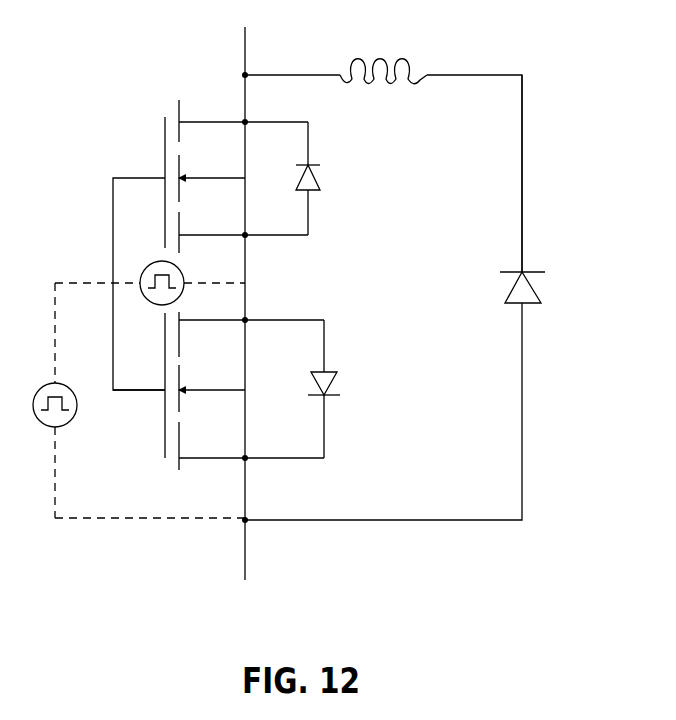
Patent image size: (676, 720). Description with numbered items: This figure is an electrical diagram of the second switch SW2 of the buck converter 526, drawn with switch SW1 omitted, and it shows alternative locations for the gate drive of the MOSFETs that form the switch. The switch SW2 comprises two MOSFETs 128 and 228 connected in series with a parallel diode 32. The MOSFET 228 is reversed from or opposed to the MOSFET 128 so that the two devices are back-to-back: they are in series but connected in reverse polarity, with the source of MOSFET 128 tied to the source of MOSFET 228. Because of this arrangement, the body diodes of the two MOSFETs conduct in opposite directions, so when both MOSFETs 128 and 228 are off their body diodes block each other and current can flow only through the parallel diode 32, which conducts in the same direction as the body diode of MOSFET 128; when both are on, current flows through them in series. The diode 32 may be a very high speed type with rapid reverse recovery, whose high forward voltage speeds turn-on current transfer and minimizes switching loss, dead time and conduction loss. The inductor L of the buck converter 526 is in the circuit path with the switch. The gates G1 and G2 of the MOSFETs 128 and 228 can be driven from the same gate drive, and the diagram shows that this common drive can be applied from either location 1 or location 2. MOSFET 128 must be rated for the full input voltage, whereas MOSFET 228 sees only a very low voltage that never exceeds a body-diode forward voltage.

The MOSFET 128 is at (152, 121).
The gate G1 is at (132, 172).
The location 2 is at (152, 262).
The MOSFET 228 is at (155, 455).
The gate G2 is at (128, 398).
The location 1 is at (40, 382).
The inductor L is at (394, 55).
The buck converter 526 is at (560, 101).
The diode 32 is at (547, 287).
The second switch SW2 is at (372, 268).